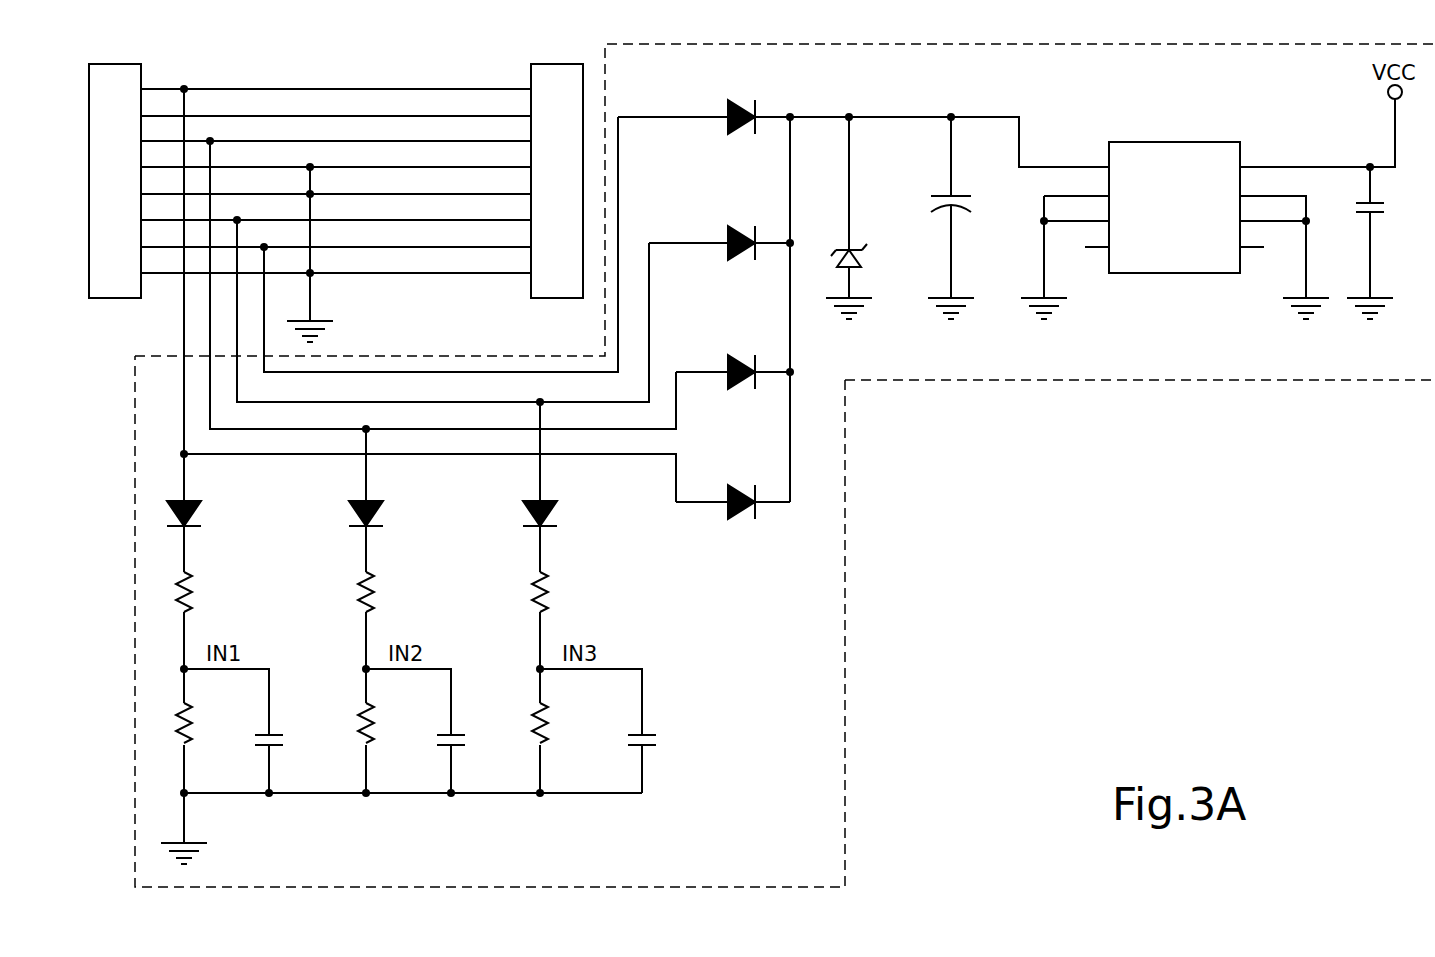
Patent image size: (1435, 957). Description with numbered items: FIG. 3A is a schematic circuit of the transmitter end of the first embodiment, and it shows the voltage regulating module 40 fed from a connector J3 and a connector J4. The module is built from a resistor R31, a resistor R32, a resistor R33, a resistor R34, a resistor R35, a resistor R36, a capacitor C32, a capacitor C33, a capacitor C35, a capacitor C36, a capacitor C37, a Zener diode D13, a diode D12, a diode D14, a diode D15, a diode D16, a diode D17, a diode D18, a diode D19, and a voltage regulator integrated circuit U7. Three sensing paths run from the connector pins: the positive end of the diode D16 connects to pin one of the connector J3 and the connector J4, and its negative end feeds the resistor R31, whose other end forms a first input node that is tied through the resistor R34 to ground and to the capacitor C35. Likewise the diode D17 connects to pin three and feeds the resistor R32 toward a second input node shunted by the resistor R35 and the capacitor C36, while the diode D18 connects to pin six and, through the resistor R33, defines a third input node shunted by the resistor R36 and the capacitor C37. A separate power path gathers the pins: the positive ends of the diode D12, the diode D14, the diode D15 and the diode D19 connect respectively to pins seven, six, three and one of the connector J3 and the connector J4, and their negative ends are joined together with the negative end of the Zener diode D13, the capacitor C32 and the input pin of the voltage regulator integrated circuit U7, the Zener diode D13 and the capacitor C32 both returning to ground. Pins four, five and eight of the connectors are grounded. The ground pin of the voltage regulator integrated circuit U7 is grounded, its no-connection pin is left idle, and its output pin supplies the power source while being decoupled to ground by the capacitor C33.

The voltage regulating module 40 is at (845, 594).
The connector J3 is at (115, 167).
The connector J4 is at (557, 167).
The diode D12 is at (737, 101).
The Zener diode D13 is at (875, 255).
The diode D14 is at (737, 227).
The diode D15 is at (737, 357).
The diode D16 is at (211, 512).
The diode D17 is at (393, 512).
The diode D18 is at (567, 512).
The diode D19 is at (737, 487).
The capacitor C32 is at (973, 205).
The capacitor C33 is at (1395, 209).
The capacitor C35 is at (294, 741).
The capacitor C36 is at (476, 741).
The capacitor C37 is at (667, 741).
The resistor R31 is at (211, 592).
The resistor R32 is at (393, 592).
The resistor R33 is at (567, 592).
The resistor R34 is at (211, 723).
The resistor R35 is at (393, 723).
The resistor R36 is at (567, 723).
The voltage regulator integrated circuit U7 is at (1174, 195).